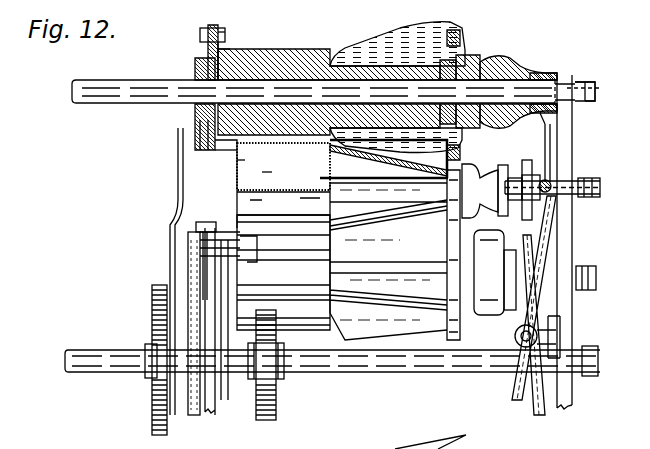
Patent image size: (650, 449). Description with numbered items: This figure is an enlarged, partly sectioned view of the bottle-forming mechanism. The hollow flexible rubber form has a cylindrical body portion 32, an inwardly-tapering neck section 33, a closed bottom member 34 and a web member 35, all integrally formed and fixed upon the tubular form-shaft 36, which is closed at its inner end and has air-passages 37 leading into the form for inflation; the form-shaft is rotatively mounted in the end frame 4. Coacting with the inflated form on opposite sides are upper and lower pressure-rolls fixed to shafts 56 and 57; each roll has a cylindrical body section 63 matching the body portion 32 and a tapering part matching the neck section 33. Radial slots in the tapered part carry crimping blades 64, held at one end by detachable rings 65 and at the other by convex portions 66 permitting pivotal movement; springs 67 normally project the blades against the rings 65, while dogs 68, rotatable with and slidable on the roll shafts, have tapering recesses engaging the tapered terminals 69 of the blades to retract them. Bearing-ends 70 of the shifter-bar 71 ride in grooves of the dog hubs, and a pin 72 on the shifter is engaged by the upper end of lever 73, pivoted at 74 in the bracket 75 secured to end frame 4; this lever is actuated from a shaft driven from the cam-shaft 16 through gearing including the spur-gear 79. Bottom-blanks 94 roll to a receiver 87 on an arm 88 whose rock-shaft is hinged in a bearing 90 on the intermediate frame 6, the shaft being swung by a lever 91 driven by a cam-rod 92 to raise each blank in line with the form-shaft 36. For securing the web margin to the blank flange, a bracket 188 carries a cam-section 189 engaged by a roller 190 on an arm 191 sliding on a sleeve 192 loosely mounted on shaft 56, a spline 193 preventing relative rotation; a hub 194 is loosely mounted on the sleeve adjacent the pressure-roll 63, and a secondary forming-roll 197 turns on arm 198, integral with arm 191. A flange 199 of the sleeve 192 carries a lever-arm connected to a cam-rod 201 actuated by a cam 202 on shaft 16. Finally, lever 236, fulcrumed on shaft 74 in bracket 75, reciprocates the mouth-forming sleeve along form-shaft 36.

The end frame 4 is at (572, 317).
The intermediate frame 6 is at (205, 412).
The cam-shaft 16 is at (368, 368).
The cylindrical body portion 32 is at (283, 177).
The inwardly-tapering neck section 33 is at (380, 158).
The closed bottom member 34 is at (248, 153).
The web member 35 is at (330, 152).
The tubular shaft 36 is at (588, 180).
The air-passages 37 is at (266, 168).
The upper roll-shaft 56 is at (590, 82).
The lower roll-shaft 57 is at (592, 264).
The body section 63 is at (300, 334).
The crimping blades 64 is at (412, 34).
The detachable rings 65 is at (454, 30).
The convex portions 66 is at (336, 58).
The springs 67 is at (450, 60).
The dogs 68 is at (505, 58).
The tapered terminals of the blades 69 is at (462, 62).
The bearing-ends 70 is at (546, 73).
The shifter-bar 71 is at (545, 156).
The pin 72 is at (556, 198).
The lever 73 is at (540, 241).
The pivot shaft 74 is at (515, 333).
The bracket 75 is at (560, 340).
The spur-gear 79 is at (264, 422).
The receiver 87 is at (188, 327).
The arm 88 is at (195, 278).
The bearing 90 is at (200, 236).
The lever 91 is at (243, 244).
The cam-rod 92 is at (228, 327).
The bottom-blanks 94 is at (237, 174).
The bracket 188 is at (222, 36).
The cam-section 189 is at (212, 25).
The roller 190 is at (200, 33).
The arm 191 is at (208, 50).
The sleeve 192 is at (204, 133).
The feather or spline 193 is at (198, 70).
The hub 194 is at (234, 47).
The secondary forming-roll 197 is at (214, 150).
The arm 198 is at (206, 140).
The outwardly-projecting flange 199 is at (196, 119).
The cam-rod 201 is at (178, 192).
The cam 202 is at (152, 420).
The lever 236 is at (506, 220).